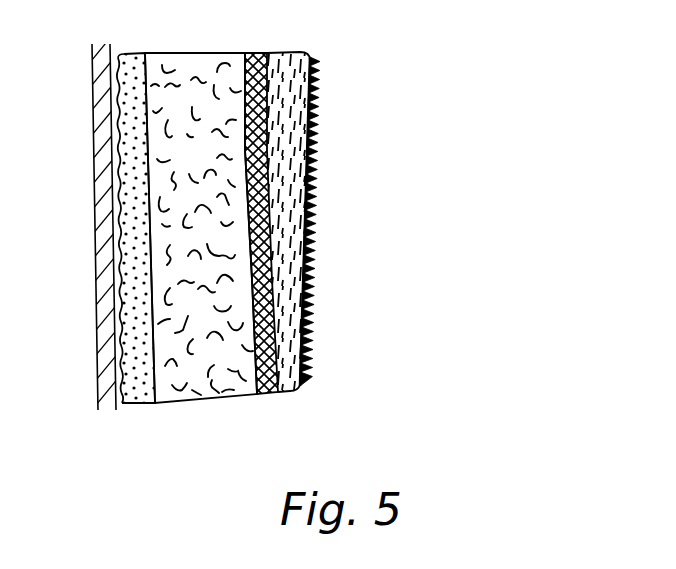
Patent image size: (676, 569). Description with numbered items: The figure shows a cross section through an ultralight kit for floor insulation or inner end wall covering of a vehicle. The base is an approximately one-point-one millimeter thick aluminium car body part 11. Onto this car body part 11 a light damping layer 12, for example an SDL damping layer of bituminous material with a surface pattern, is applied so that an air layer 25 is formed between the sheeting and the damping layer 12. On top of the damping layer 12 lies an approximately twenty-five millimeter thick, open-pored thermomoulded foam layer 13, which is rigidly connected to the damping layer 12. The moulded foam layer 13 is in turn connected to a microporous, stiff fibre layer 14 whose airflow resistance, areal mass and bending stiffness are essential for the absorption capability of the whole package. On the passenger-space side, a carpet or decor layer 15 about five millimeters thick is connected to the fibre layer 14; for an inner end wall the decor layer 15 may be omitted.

The aluminium car body part 11 is at (100, 277).
The damping layer 12 is at (150, 402).
The moulded foam layer 13 is at (213, 394).
The microporous stiff fibre layer 14 is at (273, 393).
The carpet or decor layer 15 is at (293, 390).
The air layer 25 is at (118, 406).